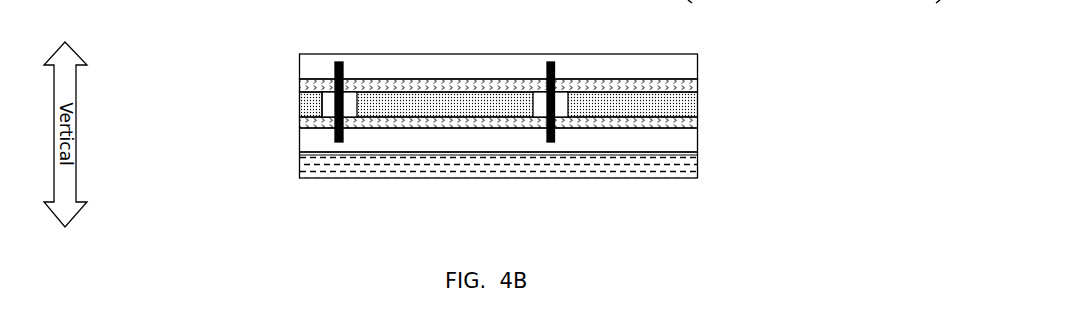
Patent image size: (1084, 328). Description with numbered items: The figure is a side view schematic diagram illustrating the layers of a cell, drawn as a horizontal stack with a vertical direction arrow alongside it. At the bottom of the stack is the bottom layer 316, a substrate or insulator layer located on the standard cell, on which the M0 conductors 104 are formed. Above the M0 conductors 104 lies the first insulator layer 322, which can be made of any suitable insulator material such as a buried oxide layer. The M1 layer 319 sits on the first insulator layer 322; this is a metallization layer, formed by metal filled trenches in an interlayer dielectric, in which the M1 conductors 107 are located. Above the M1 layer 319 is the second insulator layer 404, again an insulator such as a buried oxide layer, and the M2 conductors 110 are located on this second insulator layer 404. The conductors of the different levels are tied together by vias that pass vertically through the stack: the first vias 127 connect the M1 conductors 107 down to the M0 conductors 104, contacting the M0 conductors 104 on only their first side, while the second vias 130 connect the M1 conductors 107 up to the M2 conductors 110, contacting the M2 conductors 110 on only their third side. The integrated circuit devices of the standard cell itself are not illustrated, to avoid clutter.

The M2 conductors 110 is at (298, 67).
The M1 conductors 107 is at (357, 102).
The second vias (V1) 130 is at (557, 88).
The first vias (V0) 127 is at (322, 100).
The second insulator layer 404 is at (698, 85).
The M1 layer 319 is at (698, 103).
The first insulator layer 322 is at (698, 122).
The bottom layer 316 is at (698, 163).
The M0 conductors 104 is at (298, 140).